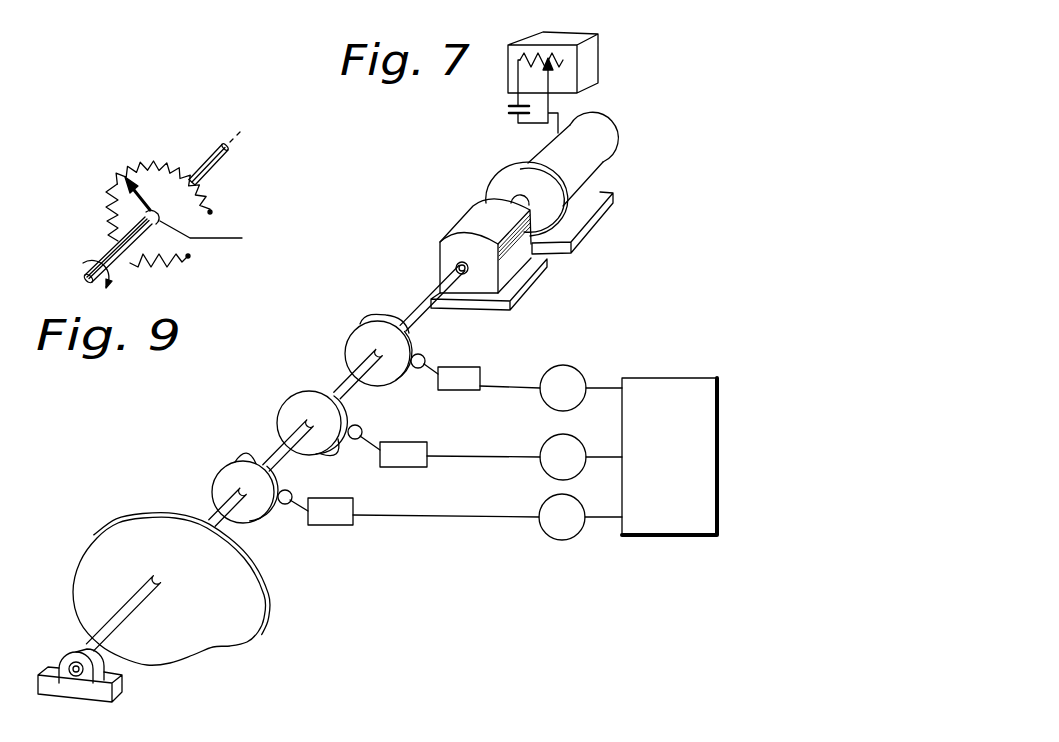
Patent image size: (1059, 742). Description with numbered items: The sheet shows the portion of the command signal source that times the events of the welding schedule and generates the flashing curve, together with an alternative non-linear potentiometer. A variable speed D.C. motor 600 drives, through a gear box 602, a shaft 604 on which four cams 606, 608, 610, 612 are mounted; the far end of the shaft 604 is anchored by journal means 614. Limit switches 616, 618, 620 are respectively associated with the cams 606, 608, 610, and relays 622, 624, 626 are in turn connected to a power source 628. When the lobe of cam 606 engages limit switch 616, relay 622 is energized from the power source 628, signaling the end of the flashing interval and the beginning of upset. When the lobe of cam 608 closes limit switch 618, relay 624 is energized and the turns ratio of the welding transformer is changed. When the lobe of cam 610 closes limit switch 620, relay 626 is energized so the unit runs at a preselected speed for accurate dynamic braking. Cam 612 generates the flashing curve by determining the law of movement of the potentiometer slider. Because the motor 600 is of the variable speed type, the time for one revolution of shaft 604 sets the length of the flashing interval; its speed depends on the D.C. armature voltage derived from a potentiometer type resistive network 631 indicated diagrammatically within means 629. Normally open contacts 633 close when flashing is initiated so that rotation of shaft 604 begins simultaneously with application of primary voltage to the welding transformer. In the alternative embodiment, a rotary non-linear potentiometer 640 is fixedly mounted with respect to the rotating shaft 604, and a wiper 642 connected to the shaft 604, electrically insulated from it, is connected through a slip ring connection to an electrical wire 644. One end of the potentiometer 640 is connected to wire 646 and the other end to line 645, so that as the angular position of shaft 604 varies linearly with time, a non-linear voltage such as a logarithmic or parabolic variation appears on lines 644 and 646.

In FIG. 7, the variable speed D.C. motor 600 is at (528, 148).
In FIG. 7, the gear box 602 is at (470, 217).
In FIG. 7, the shaft 604 is at (418, 306).
In FIG. 9, the shaft 604 is at (216, 147).
In FIG. 7, the cam 606 is at (373, 323).
In FIG. 7, the cam 608 is at (296, 394).
In FIG. 7, the cam 610 is at (228, 466).
In FIG. 7, the cam 612 is at (167, 516).
In FIG. 7, the journal means 614 is at (45, 665).
In FIG. 7, the limit switch 616 is at (482, 352).
In FIG. 7, the limit switch 618 is at (415, 443).
In FIG. 7, the limit switch 620 is at (344, 502).
In FIG. 7, the relay 622 is at (583, 350).
In FIG. 7, the relay 624 is at (562, 436).
In FIG. 7, the relay 626 is at (555, 505).
In FIG. 7, the power source 628 is at (683, 381).
In FIG. 7, the means 629 is at (592, 66).
In FIG. 7, the potentiometer type resistive network 631 is at (563, 46).
In FIG. 7, the normally open contacts 633 is at (509, 110).
In FIG. 9, the rotary non-linear potentiometer 640 is at (124, 178).
In FIG. 9, the wiper 642 is at (105, 217).
In FIG. 9, the electrical wire 644 is at (242, 238).
In FIG. 9, the line 645 is at (190, 258).
In FIG. 9, the wire 646 is at (210, 212).